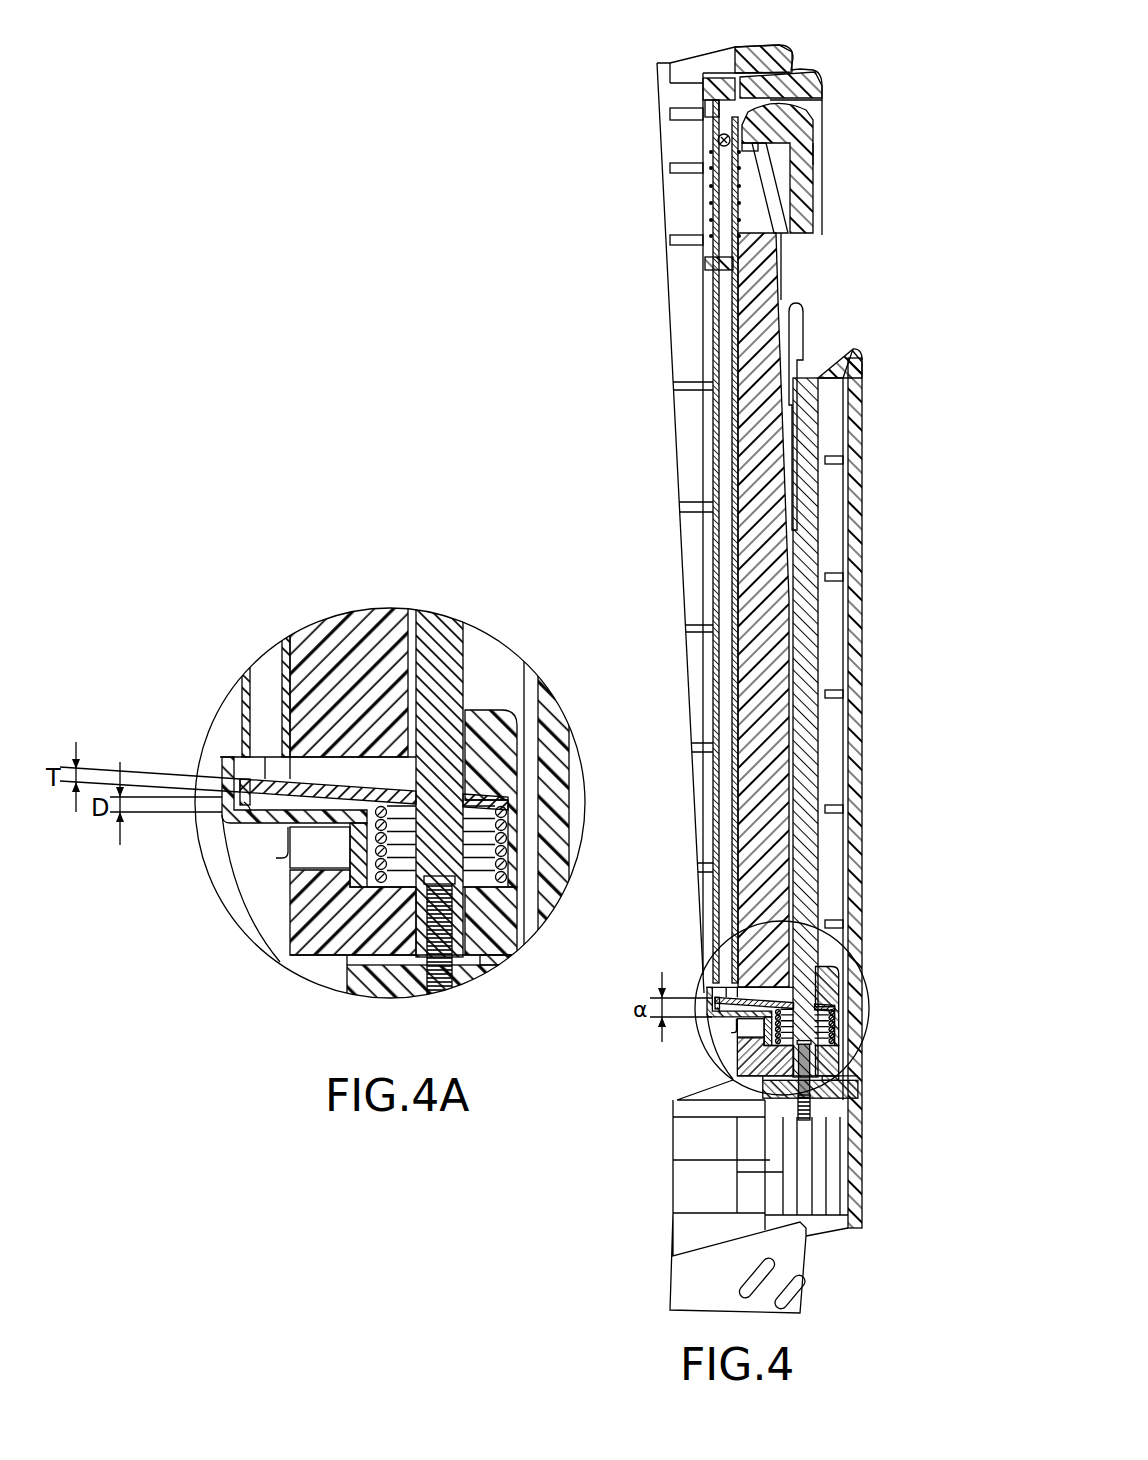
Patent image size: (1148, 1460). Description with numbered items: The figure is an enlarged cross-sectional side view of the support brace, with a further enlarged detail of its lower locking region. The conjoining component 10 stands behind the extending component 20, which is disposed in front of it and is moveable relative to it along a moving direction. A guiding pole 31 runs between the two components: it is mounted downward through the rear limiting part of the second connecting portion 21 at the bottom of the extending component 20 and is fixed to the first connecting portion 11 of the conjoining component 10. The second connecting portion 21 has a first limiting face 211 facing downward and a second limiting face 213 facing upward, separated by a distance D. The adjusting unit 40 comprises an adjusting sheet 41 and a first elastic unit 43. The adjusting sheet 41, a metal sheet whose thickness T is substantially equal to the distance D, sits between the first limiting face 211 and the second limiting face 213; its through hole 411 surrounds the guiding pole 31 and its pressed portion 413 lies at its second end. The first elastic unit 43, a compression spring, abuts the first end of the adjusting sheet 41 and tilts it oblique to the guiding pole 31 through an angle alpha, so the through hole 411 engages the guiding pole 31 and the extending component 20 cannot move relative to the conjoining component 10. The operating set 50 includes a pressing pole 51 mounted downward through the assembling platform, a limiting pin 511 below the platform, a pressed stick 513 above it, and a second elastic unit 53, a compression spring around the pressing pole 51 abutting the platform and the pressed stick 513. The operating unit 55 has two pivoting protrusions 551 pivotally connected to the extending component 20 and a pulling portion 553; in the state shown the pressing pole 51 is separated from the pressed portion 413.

In FIG. 4, the conjoining component 10 is at (880, 737).
In FIG. 4A, the first connecting portion 11 is at (352, 988).
In FIG. 4, the extending component 20 is at (822, 46).
In FIG. 4A, the second connecting portion 21 is at (498, 700).
In FIG. 4A, the first limiting face 211 is at (478, 806).
In FIG. 4A, the second limiting face 213 is at (238, 812).
In FIG. 4A, the guiding pole 31 is at (435, 632).
In FIG. 4, the adjusting unit 40 is at (710, 1035).
In FIG. 4A, the adjusting sheet 41 is at (244, 765).
In FIG. 4A, the through hole 411 is at (447, 794).
In FIG. 4A, the pressed portion 413 is at (283, 802).
In FIG. 4A, the first elastic unit 43 is at (508, 852).
In FIG. 4, the operating set 50 is at (843, 108).
In FIG. 4, the pressing pole 51 is at (720, 454).
In FIG. 4A, the pressing pole 51 is at (240, 702).
In FIG. 4, the limiting pin 511 is at (706, 263).
In FIG. 4, the pressed stick 513 is at (717, 142).
In FIG. 4, the second elastic unit 53 is at (712, 219).
In FIG. 4, the operating unit 55 is at (826, 190).
In FIG. 4, the pivoting protrusions 551 is at (822, 150).
In FIG. 4, the pulling portion 553 is at (806, 222).